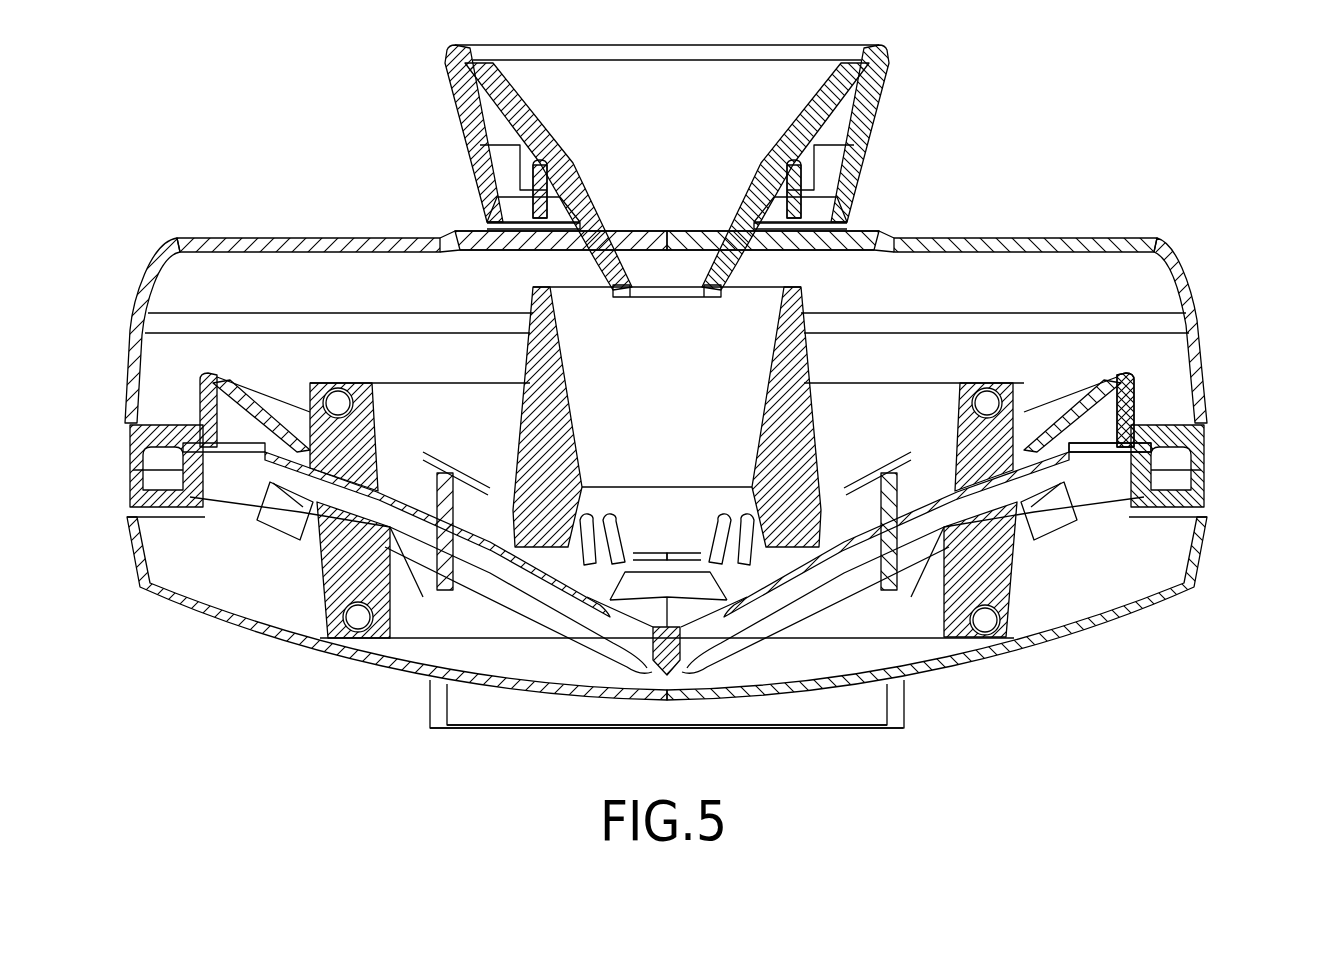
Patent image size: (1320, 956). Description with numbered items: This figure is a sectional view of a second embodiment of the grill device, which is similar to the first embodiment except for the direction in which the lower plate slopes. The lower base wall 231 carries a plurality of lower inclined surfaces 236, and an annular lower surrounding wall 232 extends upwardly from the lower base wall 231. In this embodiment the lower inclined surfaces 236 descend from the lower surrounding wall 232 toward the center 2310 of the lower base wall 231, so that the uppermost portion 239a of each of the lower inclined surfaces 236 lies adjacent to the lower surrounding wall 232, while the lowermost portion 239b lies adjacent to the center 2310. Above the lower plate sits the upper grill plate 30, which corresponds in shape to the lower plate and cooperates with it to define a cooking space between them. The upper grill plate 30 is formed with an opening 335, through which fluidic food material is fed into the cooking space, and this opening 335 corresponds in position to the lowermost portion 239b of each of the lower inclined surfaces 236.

The upper grill plate 30 is at (1137, 402).
The lower surrounding wall 232 is at (1133, 473).
The uppermost portion 239a is at (1105, 507).
The lowermost portion 239b is at (677, 627).
The lower inclined surfaces 236 is at (440, 593).
The center 2310 is at (660, 660).
The lower base wall 231 is at (813, 543).
The opening 335 is at (578, 338).